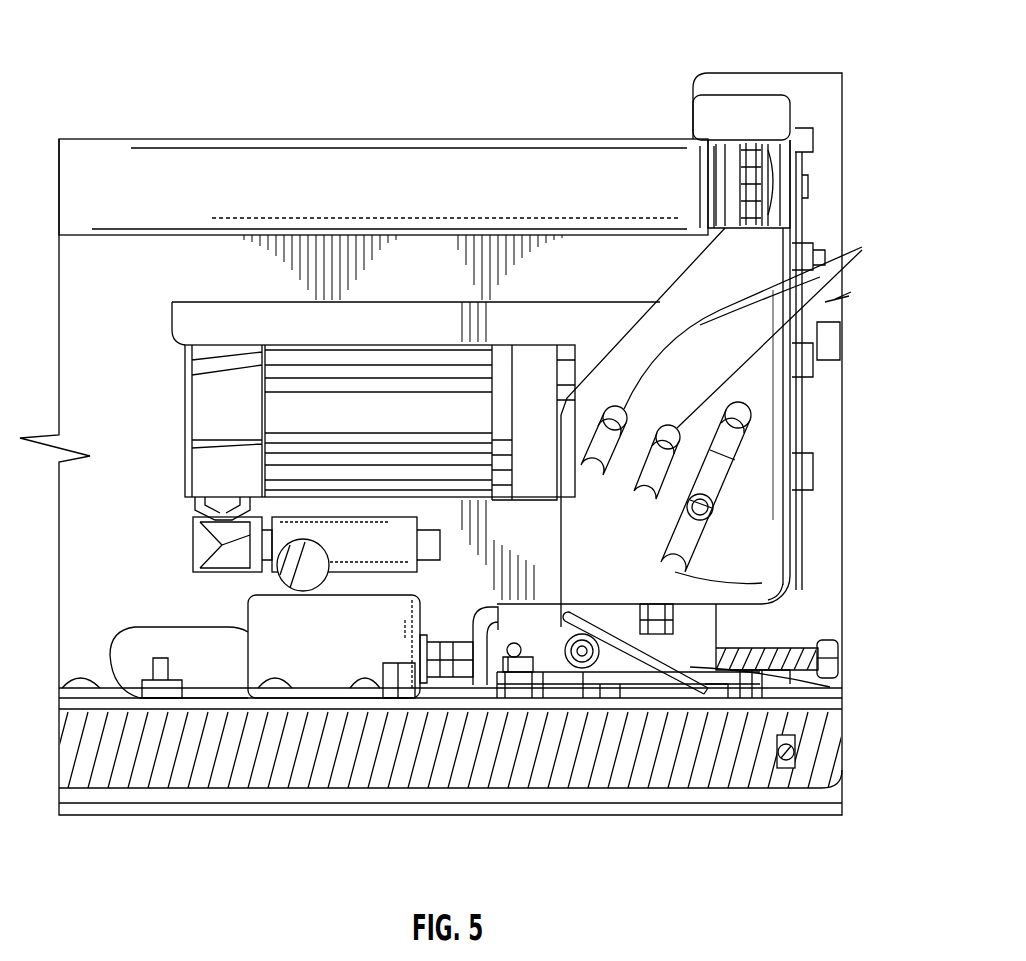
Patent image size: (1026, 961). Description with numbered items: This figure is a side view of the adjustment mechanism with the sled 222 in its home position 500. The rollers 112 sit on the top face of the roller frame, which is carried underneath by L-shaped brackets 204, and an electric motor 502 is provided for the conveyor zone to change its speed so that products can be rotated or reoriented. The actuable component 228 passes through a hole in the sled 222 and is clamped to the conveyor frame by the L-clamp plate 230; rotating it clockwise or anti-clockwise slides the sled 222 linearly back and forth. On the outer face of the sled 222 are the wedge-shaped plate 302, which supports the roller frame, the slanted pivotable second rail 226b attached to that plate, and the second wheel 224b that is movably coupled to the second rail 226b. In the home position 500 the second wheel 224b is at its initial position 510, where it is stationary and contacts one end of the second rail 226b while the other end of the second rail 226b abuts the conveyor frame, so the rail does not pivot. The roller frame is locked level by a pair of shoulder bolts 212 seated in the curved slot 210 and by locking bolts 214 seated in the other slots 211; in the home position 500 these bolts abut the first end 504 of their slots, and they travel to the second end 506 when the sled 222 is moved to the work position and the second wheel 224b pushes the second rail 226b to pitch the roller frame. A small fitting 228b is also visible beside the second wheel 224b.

The home position 500 is at (561, 42).
The rollers 112 is at (415, 168).
The electric motor 502 is at (212, 396).
The brackets 204 is at (765, 552).
The locking bolts 214 is at (798, 269).
The other slots 211 is at (652, 482).
The first end 504 is at (835, 357).
The shoulder bolts 212 is at (713, 493).
The curved slot 210 is at (700, 510).
The second end 506 is at (790, 585).
The second rail 226b is at (562, 605).
The wedge-shaped plate 302 is at (668, 648).
The initial position 510 is at (582, 672).
The sled 222 is at (478, 650).
The actuable component 228 is at (438, 645).
The bracket 228b is at (840, 655).
The second wheel 224b is at (772, 683).
The L-clamp plate 230 is at (275, 618).